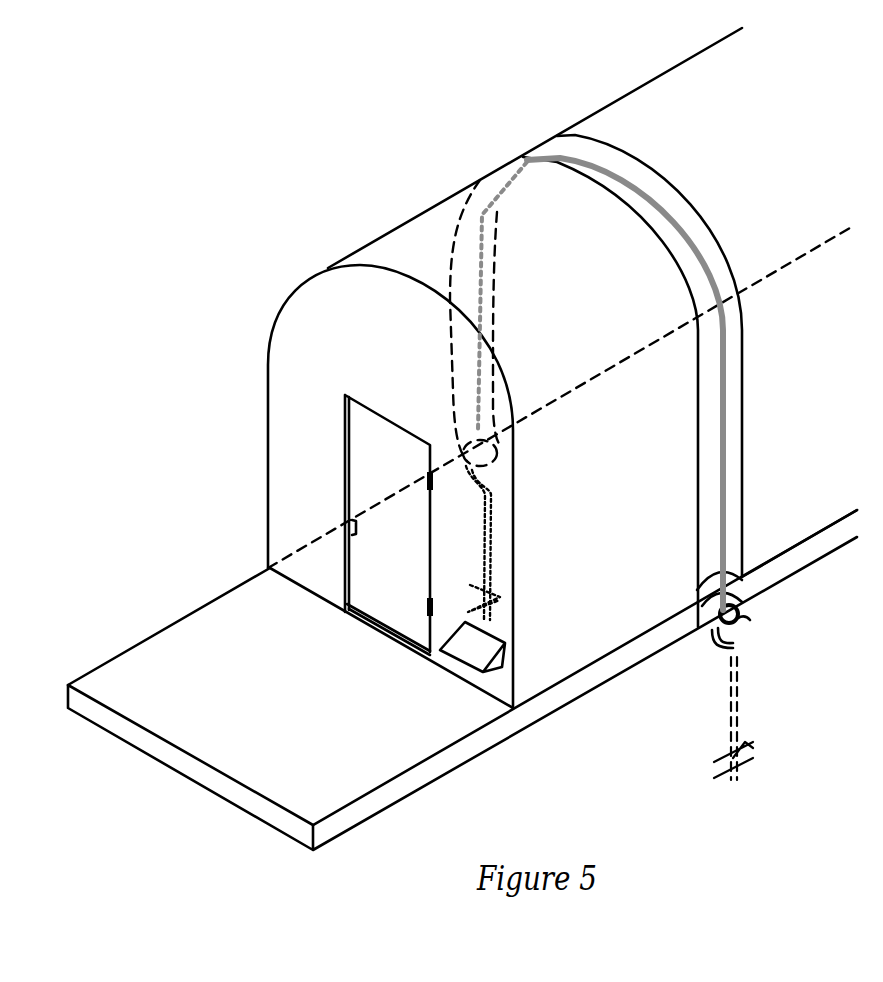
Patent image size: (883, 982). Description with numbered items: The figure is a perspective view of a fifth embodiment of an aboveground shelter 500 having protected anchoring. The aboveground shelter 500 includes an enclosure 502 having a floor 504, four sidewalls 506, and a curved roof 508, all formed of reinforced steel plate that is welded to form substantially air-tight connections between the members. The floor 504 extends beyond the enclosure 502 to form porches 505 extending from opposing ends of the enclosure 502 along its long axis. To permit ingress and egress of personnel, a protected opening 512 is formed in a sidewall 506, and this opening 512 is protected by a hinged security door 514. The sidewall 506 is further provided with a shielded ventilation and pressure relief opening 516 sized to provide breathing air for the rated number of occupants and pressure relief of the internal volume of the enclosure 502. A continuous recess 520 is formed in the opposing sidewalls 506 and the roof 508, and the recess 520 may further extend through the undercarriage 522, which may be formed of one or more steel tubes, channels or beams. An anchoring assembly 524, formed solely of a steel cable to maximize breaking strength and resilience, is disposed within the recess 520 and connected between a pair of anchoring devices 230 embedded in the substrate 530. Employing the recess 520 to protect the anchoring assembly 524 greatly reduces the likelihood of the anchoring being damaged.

The aboveground shelter 500 is at (433, 72).
The enclosure 502 is at (402, 223).
The floor 504 is at (202, 628).
The porch 505 is at (216, 560).
The sidewall 506 is at (297, 363).
The roof 508 is at (660, 100).
The protected opening 512 is at (380, 416).
The hinged security door 514 is at (383, 602).
The shielded ventilation and pressure relief opening 516 is at (505, 660).
The continuous recess 520 is at (747, 416).
The undercarriage 522 is at (485, 740).
The anchoring assembly 524 is at (728, 510).
The substrate 530 is at (871, 619).
The anchoring device 230 is at (740, 703).